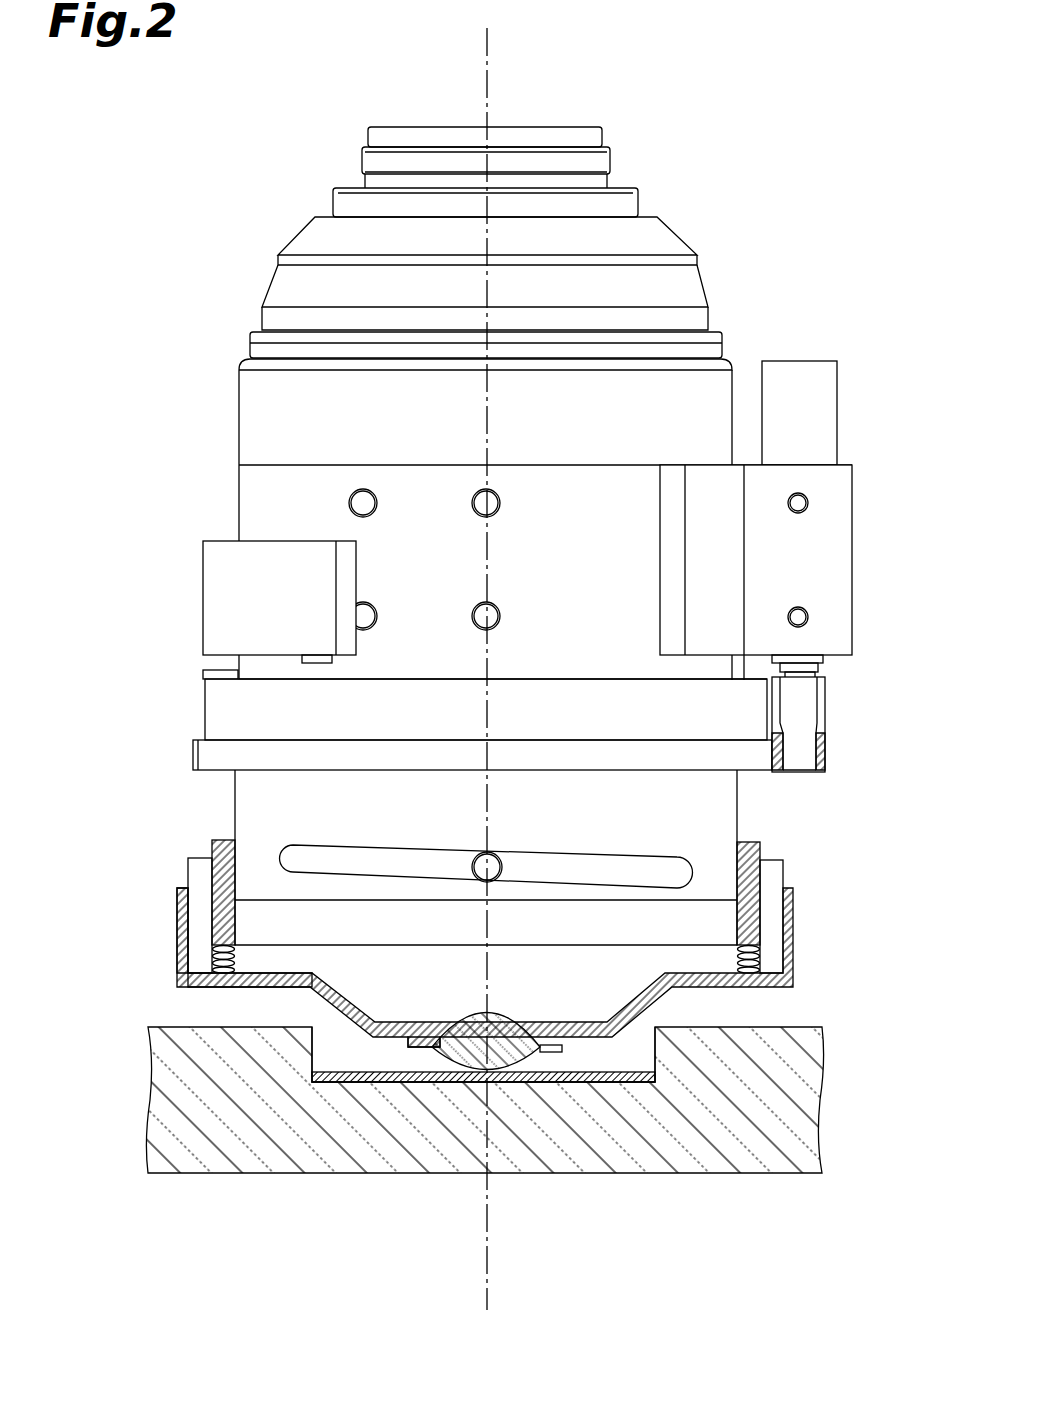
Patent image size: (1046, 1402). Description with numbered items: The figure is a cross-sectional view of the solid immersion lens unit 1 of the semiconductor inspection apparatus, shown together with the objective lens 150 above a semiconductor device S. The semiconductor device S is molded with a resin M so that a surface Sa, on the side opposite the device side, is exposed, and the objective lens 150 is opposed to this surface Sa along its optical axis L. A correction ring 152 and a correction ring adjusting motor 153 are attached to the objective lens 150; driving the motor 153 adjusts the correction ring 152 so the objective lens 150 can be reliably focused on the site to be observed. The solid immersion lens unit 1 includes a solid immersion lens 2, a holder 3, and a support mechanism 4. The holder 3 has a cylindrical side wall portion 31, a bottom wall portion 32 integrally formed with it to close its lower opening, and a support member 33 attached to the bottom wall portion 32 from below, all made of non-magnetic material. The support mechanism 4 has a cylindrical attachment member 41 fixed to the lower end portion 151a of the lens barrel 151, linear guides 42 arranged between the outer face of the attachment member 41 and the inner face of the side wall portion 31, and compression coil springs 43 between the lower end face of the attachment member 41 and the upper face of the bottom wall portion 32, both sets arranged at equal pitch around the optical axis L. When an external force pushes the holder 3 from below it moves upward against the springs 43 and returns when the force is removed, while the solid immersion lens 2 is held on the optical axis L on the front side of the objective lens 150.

The solid immersion lens unit 1 is at (521, 671).
The solid immersion lens 2 is at (512, 1047).
The holder 3 is at (491, 1052).
The support mechanism 4 is at (490, 899).
The side wall portion 31 is at (177, 940).
The bottom wall portion 32 is at (265, 980).
The support member 33 is at (420, 1048).
The attachment member 41 is at (747, 872).
The linear guides 42 is at (200, 907).
The compression coil springs 43 is at (222, 953).
The objective lens 150 is at (238, 410).
The lens barrel 151 is at (238, 503).
The lower end portion 151a is at (247, 860).
The correction ring 152 is at (192, 758).
The correction ring adjusting motor 153 is at (838, 403).
The optical axis L is at (487, 62).
The resin M is at (350, 1153).
The semiconductor device S is at (588, 1083).
The surface Sa is at (638, 1065).